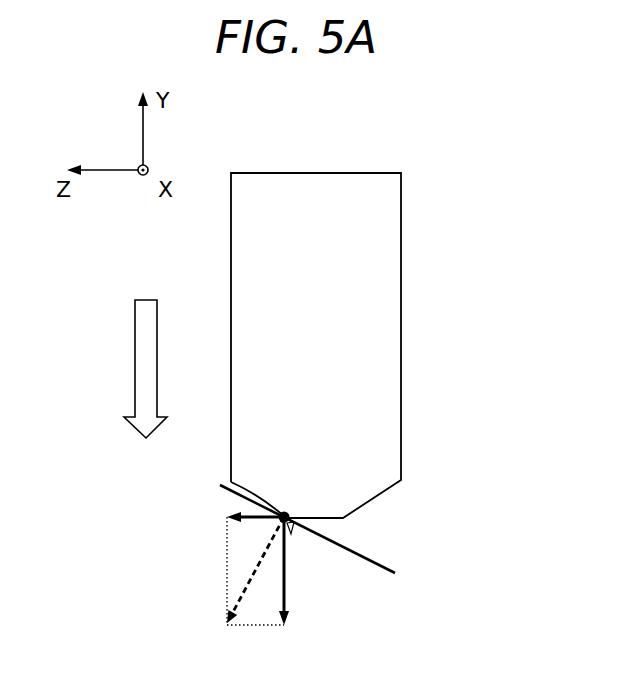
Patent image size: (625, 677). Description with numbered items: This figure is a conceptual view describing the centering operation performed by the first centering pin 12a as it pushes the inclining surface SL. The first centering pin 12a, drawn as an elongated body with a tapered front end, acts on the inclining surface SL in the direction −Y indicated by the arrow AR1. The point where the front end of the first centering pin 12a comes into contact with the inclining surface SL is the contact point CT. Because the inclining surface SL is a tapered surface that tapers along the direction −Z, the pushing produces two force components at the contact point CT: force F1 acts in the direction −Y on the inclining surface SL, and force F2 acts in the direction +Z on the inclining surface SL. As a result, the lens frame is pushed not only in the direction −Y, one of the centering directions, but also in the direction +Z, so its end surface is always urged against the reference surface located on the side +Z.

The first centering pin 12a is at (382, 273).
The arrow AR1 is at (140, 358).
The contact point CT is at (284, 515).
The inclining surface SL is at (343, 545).
The force F1 is at (284, 592).
The force F2 is at (260, 518).